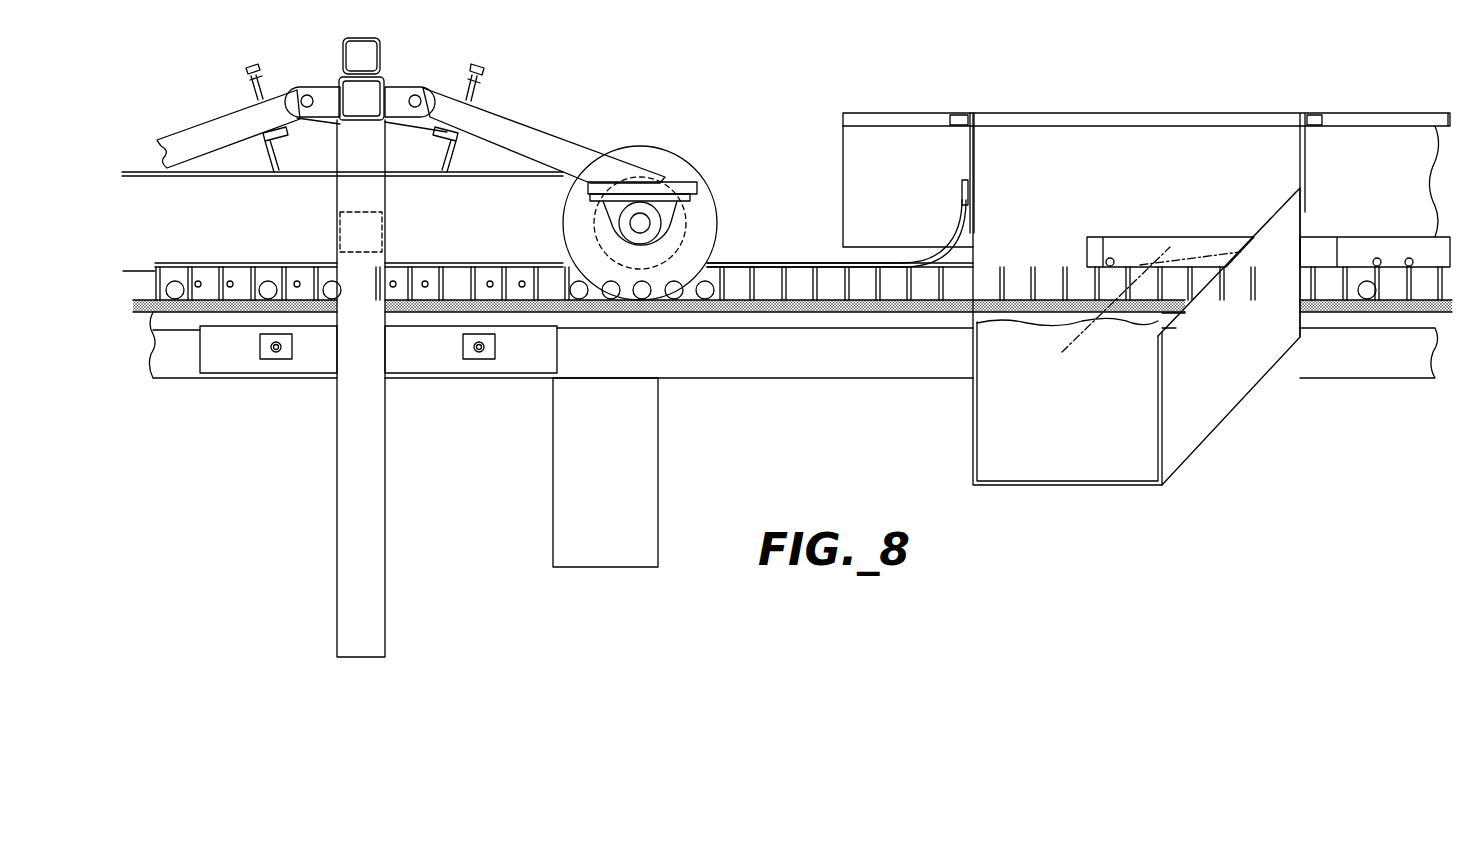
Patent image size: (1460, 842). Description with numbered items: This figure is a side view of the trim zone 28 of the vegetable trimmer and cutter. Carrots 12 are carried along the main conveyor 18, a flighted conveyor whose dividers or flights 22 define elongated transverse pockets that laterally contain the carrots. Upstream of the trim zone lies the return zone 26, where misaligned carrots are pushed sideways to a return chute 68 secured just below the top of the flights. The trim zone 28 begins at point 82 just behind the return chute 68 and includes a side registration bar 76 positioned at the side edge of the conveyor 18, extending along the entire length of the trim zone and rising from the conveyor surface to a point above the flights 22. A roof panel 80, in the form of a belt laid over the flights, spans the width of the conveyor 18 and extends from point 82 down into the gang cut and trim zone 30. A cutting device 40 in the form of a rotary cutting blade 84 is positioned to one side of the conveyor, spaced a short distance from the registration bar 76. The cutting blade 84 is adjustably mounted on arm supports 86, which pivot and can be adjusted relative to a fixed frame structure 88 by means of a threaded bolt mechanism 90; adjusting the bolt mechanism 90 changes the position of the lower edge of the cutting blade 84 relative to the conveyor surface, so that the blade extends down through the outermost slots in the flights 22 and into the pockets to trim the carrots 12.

The carrots 12 is at (676, 280).
The main conveyor 18 is at (508, 300).
The flights 22 is at (805, 285).
The return zone 26 is at (1184, 60).
The trim zone 28 is at (781, 102).
The gang cut and trim zone 30 is at (152, 90).
The cutting device 40 is at (722, 184).
The return chute 68 is at (1198, 437).
The side registration bar 76 is at (835, 262).
The roof panel 80 is at (933, 250).
The point 82 is at (988, 243).
The rotary cutting blade 84 is at (650, 146).
The arm supports 86 is at (553, 132).
The fixed frame structure 88 is at (355, 37).
The threaded bolt mechanism 90 is at (480, 84).